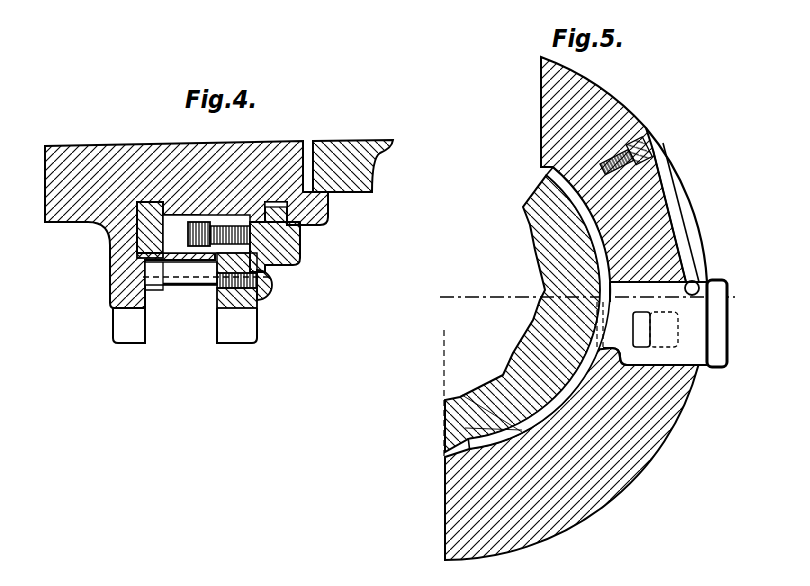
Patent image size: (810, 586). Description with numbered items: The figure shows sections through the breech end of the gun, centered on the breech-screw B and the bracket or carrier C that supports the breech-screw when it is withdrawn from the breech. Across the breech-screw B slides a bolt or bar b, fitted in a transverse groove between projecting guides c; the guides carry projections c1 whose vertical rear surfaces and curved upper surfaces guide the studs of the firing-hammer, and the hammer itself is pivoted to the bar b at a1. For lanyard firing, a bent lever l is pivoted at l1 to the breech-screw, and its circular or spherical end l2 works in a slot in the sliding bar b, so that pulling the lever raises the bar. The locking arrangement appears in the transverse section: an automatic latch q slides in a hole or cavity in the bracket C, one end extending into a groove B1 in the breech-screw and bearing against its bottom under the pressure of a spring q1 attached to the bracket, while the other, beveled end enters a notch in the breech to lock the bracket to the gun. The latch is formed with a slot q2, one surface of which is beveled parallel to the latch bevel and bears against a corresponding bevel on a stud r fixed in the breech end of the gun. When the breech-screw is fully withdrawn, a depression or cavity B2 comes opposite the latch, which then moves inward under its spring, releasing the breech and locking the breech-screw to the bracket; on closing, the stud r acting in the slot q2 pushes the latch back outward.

In FIG. 4, the breech-screw B is at (186, 224).
In FIG. 5, the breech-screw B is at (522, 313).
In FIG. 4, the bracket or carrier C is at (353, 166).
In FIG. 5, the bracket or carrier C is at (576, 308).
In FIG. 4, the sliding bolt or bar b is at (150, 230).
In FIG. 4, the circular or spherical end of lever l2 is at (206, 234).
In FIG. 4, the pivot of lever l1 is at (276, 224).
In FIG. 4, the bent lever l is at (300, 238).
In FIG. 4, the pivot of firing-hammer a1 is at (206, 276).
In FIG. 4, the projections on guides c1 is at (129, 313).
In FIG. 4, the projecting guides c is at (244, 298).
In FIG. 5, the spring q1 is at (680, 222).
In FIG. 5, the automatic latch q is at (662, 323).
In FIG. 5, the slot in latch q2 is at (633, 325).
In FIG. 5, the stud r is at (664, 329).
In FIG. 5, the groove in breech-screw B1 is at (578, 388).
In FIG. 5, the depression or cavity B2 is at (490, 427).